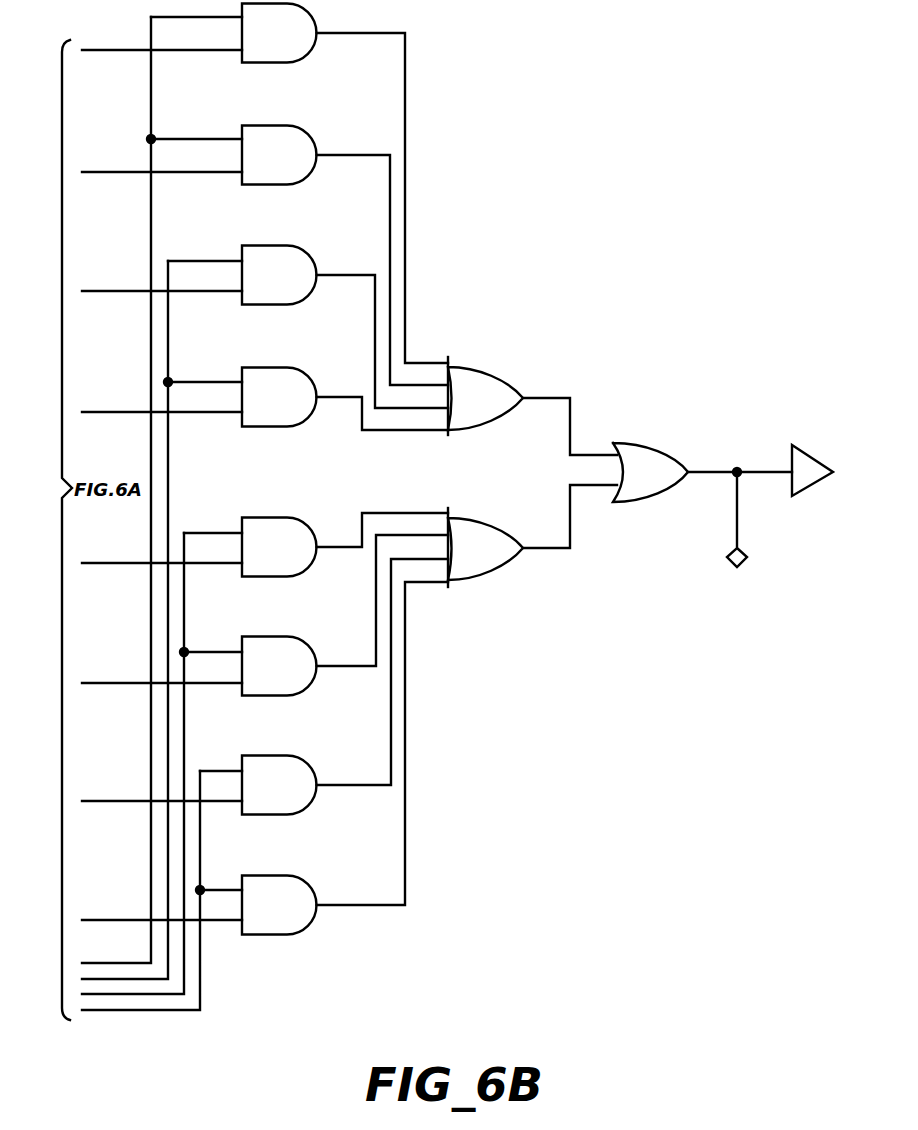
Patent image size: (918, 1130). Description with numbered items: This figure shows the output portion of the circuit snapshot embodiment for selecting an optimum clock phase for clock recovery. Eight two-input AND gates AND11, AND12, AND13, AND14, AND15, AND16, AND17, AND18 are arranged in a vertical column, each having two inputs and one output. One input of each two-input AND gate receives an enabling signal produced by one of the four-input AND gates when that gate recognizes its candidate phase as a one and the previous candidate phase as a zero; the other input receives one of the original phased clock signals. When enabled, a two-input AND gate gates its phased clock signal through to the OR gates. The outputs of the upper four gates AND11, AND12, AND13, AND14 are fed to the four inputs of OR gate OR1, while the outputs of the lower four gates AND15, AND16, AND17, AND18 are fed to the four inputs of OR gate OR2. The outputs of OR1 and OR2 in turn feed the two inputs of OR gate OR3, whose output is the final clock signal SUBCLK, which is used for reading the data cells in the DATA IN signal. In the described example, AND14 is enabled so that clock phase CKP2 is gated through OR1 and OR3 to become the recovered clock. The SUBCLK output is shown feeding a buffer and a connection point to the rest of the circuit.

The 2-input AND gate AND11 is at (265, 182).
The 2-input AND gate AND12 is at (265, 254).
The 2-input AND gate AND13 is at (265, 326).
The 2-input AND gate AND14 is at (265, 399).
The 2-input AND gate AND15 is at (265, 548).
The 2-input AND gate AND16 is at (265, 619).
The 2-input AND gate AND17 is at (265, 690).
The 2-input AND gate AND18 is at (265, 761).
The OR gate OR1 is at (524, 401).
The OR gate OR2 is at (524, 536).
The OR gate OR3 is at (693, 473).
The final clock signal SUBCLK is at (766, 506).